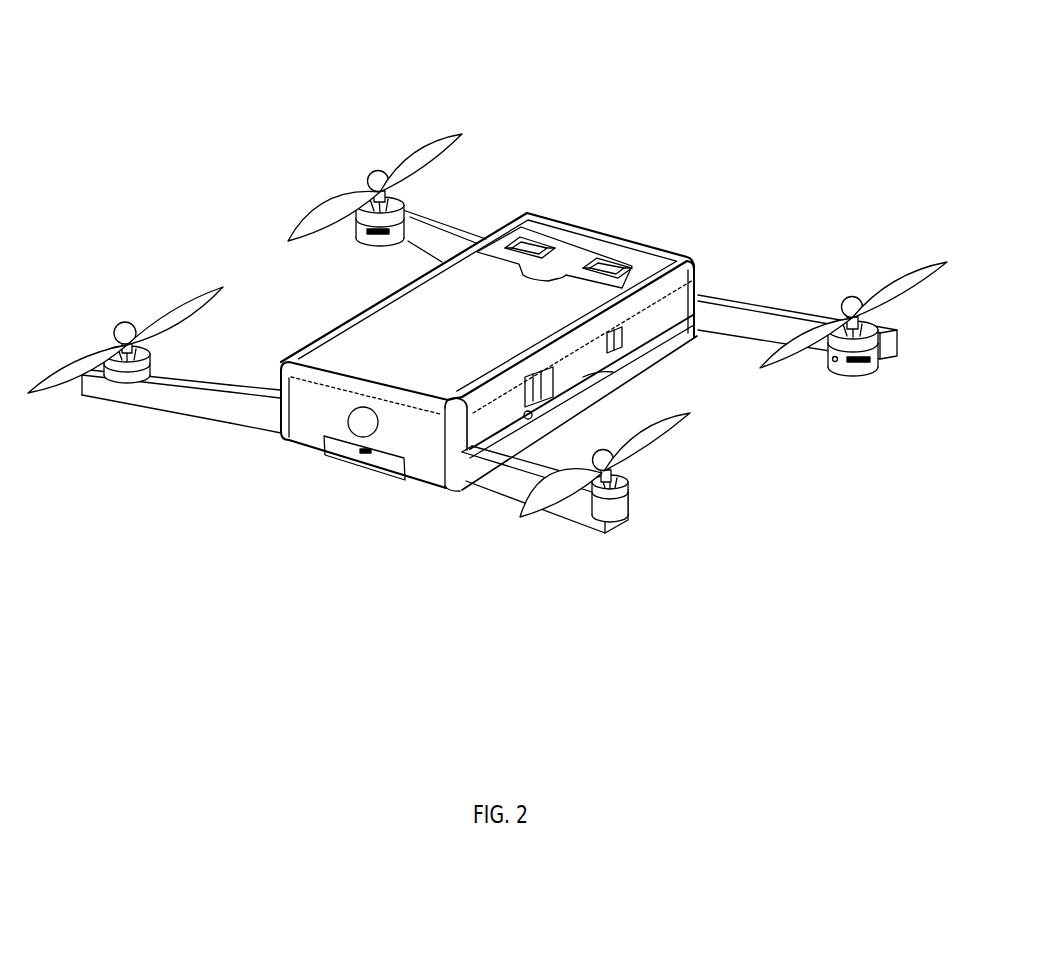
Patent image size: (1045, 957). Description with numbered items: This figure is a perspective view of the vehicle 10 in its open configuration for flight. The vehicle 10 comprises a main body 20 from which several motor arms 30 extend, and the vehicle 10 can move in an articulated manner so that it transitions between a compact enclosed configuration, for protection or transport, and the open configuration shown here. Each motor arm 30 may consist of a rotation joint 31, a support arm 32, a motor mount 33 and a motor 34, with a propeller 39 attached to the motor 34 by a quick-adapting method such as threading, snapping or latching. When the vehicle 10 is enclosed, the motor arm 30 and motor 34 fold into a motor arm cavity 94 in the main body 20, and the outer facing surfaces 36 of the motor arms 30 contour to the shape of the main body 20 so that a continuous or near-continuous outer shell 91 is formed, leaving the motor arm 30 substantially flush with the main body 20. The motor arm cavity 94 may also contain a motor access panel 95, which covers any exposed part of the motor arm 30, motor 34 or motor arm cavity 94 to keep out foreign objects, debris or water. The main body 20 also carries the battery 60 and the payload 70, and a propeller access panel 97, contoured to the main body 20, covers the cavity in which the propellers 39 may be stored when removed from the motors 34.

The vehicle 10 is at (487, 336).
The main body 20 is at (406, 323).
The motor arm 30 is at (145, 420).
The rotation joint 31 is at (539, 543).
The support arm 32 is at (797, 291).
The motor mount 33 is at (878, 360).
The motor 34 is at (700, 547).
The outer facing surface 36 is at (202, 443).
The propeller 39 is at (125, 302).
The battery 60 is at (598, 218).
The payload 70 is at (250, 493).
The outer shell 91 is at (650, 298).
The motor arm cavity 94 is at (644, 407).
The motor access panel 95 is at (675, 373).
The propeller access panel 97 is at (275, 537).